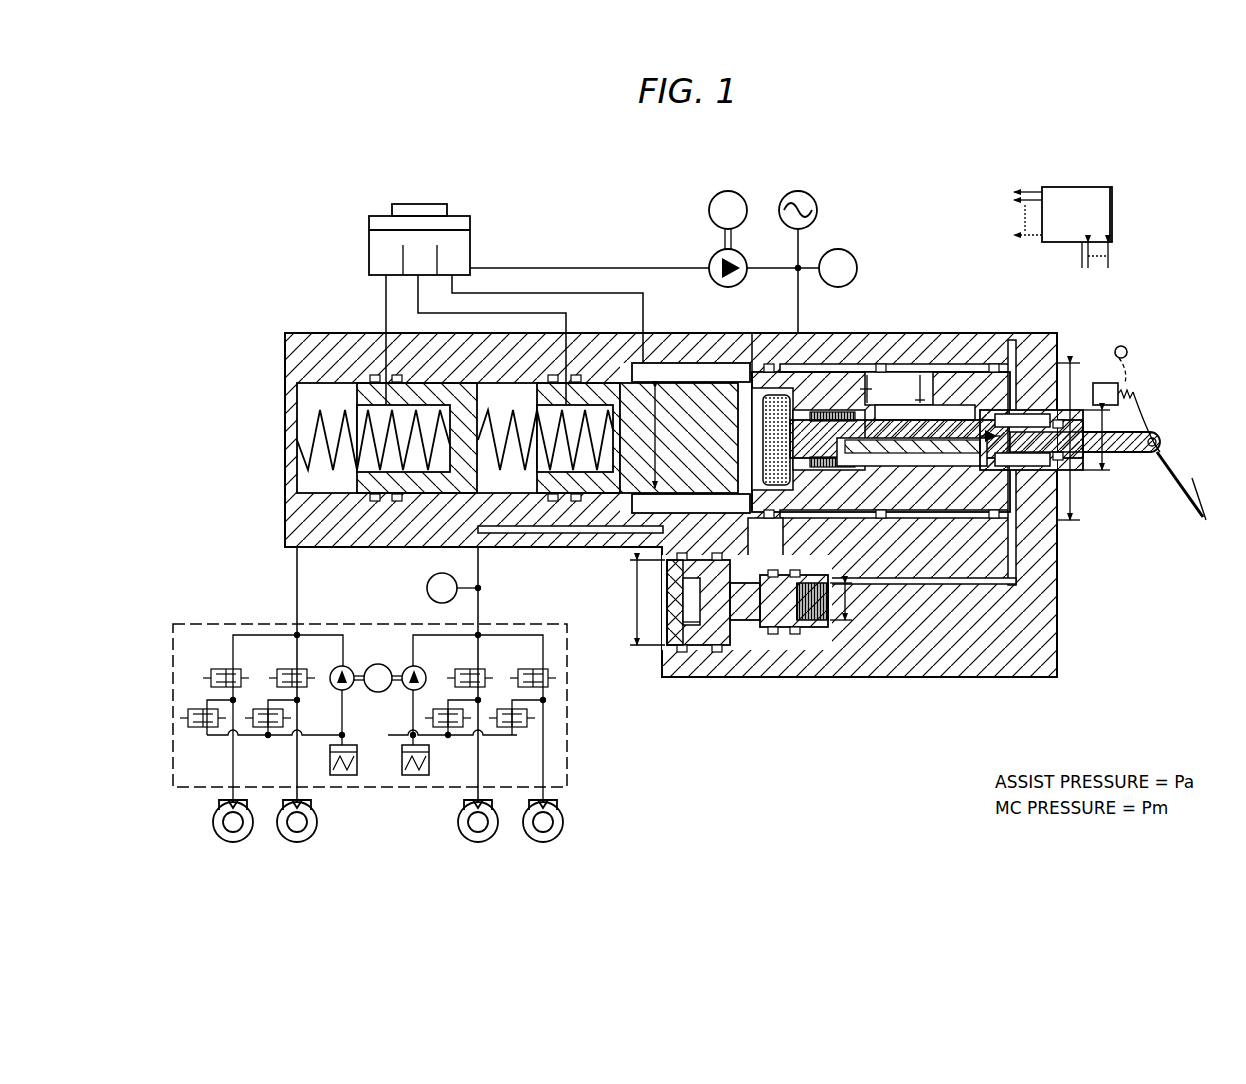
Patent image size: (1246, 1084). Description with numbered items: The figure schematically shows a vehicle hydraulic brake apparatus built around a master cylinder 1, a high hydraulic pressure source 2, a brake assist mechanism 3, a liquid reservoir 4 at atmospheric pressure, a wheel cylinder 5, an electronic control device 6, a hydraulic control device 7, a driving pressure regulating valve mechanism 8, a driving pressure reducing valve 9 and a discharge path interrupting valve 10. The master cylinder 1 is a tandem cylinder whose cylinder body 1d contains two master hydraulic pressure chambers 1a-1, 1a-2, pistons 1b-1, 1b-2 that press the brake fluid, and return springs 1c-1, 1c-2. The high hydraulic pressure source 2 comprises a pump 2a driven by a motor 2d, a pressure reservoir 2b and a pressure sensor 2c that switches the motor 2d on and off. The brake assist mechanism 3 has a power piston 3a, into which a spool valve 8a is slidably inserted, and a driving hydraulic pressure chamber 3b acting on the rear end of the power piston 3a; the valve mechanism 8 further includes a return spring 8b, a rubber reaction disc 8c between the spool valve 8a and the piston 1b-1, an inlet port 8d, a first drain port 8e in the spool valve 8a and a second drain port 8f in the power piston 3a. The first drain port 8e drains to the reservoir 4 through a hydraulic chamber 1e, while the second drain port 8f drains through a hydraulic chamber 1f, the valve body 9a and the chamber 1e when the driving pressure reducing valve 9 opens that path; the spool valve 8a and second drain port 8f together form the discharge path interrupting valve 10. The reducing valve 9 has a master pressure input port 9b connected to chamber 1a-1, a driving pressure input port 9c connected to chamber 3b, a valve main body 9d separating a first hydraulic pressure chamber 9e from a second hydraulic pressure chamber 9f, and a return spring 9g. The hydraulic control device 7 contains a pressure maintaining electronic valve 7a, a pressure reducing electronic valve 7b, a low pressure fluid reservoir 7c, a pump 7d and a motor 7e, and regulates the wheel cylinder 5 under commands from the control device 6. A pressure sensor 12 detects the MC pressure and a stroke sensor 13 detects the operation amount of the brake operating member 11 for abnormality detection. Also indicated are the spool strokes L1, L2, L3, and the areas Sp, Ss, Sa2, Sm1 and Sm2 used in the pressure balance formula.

The master cylinder 1 is at (343, 325).
The cylinder body 1d is at (297, 362).
The master hydraulic pressure chamber 1a-2 is at (333, 480).
The master hydraulic pressure chamber 1a-1 is at (508, 480).
The return spring 1c-2 is at (298, 470).
The return spring 1c-1 is at (605, 478).
The piston 1b-2 is at (418, 330).
The piston 1b-1 is at (596, 370).
The hydraulic chamber 1e is at (680, 363).
The hydraulic chamber 1f is at (985, 404).
The high hydraulic pressure source 2 is at (795, 190).
The pump 2a is at (712, 255).
The pressure reservoir (accumulator) 2b is at (818, 205).
The pressure sensor 2c is at (852, 256).
The motor 2d is at (726, 190).
The brake assist mechanism 3 is at (978, 350).
The power piston 3a is at (957, 580).
The driving hydraulic pressure chamber 3b is at (1015, 365).
The liquid reservoir 4 is at (470, 250).
The wheel cylinder 5 is at (218, 806).
The electronic control device 6 is at (1095, 195).
The hydraulic control device 7 is at (572, 720).
The pressure maintaining electronic valve 7a is at (465, 668).
The pressure reducing electronic valve 7b is at (445, 728).
The low pressure fluid reservoir 7c is at (402, 760).
The pump 7d is at (408, 667).
The motor 7e is at (380, 693).
The driving pressure regulating valve mechanism 8 is at (912, 418).
The spool valve 8a is at (930, 404).
The return spring 8b is at (825, 410).
The rubber reaction disc 8c is at (775, 392).
The inlet port 8d is at (880, 372).
The first drain port 8e is at (925, 466).
The second drain port 8f is at (1012, 586).
The driving pressure reducing valve 9 is at (752, 645).
The valve body 9a is at (752, 632).
The master pressure input port 9b is at (625, 540).
The driving pressure input port 9c is at (880, 580).
The valve main body 9d is at (692, 618).
The first hydraulic pressure chamber 9e is at (690, 648).
The second hydraulic pressure chamber 9f is at (800, 625).
The return spring 9g is at (812, 622).
The discharge path interrupting valve 10 is at (1048, 540).
The brake operating member 11 is at (1197, 478).
The pressure sensor 12 is at (428, 582).
The stroke sensor 13 is at (1105, 383).
The pressure receiving area of the piston 1b-1 Sm1 is at (654, 438).
The pressure receiving area of the valve main body receiving the MC pressure Sm2 is at (642, 602).
The pressure receiving area of the valve main body receiving the assist pressure Sa2 is at (850, 600).
The pressure receiving area of the power piston Sp is at (1076, 440).
The sectional area of the spool valve Ss is at (1100, 442).
The stroke of the spool valve to close the first drain port L1 is at (1040, 365).
The stroke of the spool valve continuously closing the second drain port L2 is at (922, 374).
The stroke of the spool valve to the inlet port L3 is at (870, 372).